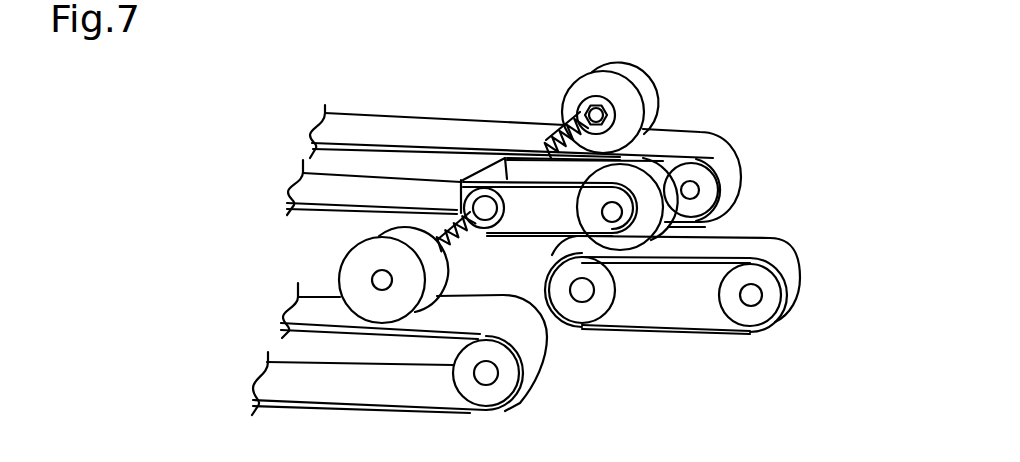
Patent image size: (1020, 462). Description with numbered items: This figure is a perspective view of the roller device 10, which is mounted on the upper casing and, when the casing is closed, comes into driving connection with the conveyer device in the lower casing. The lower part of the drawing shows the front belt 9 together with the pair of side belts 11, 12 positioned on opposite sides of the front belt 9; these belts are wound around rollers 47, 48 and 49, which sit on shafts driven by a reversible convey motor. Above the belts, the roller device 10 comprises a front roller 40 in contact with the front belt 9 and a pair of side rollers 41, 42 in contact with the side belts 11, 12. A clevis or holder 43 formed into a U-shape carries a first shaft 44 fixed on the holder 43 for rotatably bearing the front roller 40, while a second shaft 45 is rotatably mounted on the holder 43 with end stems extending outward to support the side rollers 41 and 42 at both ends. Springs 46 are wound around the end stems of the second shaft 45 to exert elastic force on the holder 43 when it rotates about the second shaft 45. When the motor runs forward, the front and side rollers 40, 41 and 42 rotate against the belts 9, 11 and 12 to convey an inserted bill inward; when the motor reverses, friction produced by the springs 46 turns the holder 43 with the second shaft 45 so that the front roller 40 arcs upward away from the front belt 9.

The front belt 9 is at (778, 250).
The roller device 10 is at (700, 92).
The side belt 11 is at (530, 344).
The side belt 12 is at (723, 152).
The front roller 40 is at (717, 221).
The side roller 41 is at (360, 258).
The side roller 42 is at (640, 78).
The holder 43 is at (512, 222).
The first shaft 44 is at (605, 215).
The second shaft 45 is at (575, 117).
The spring 46 is at (550, 134).
The roller 47 is at (750, 312).
The roller 48 is at (492, 400).
The roller 49 is at (700, 183).